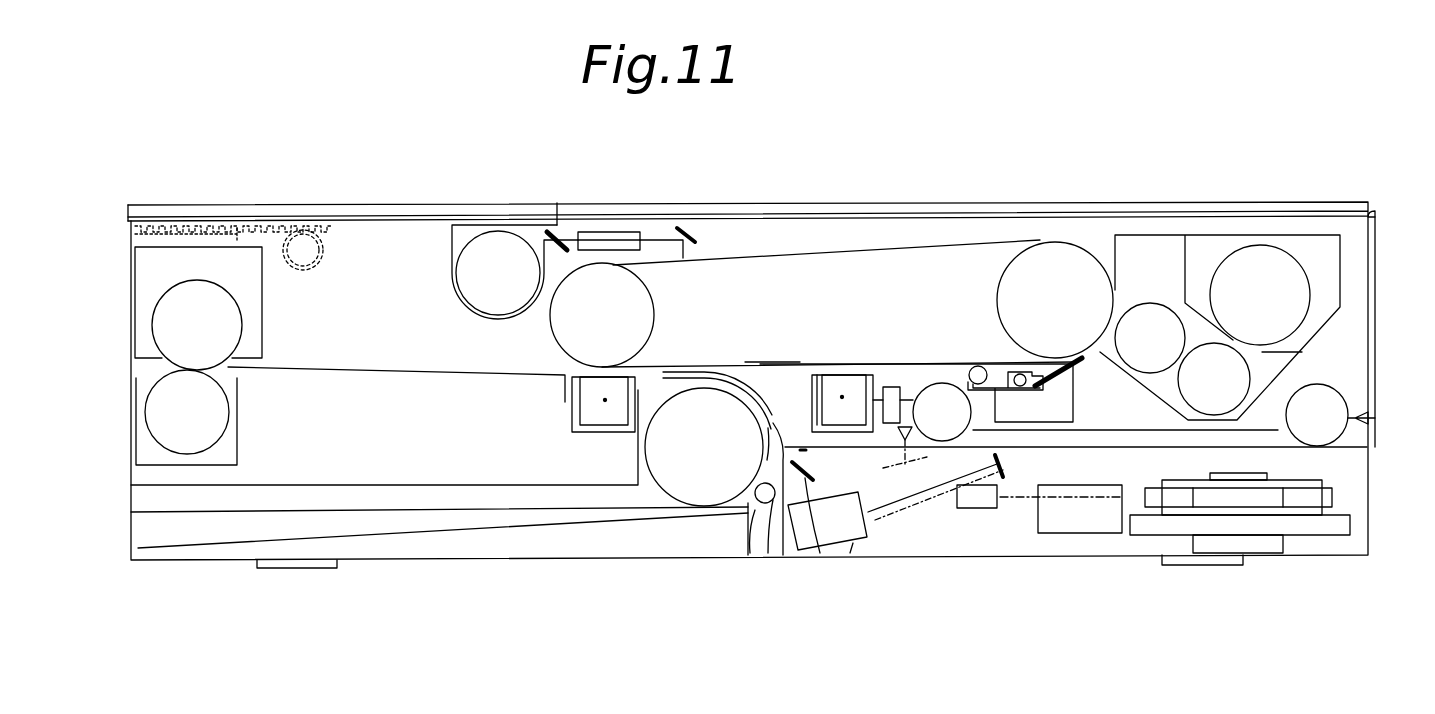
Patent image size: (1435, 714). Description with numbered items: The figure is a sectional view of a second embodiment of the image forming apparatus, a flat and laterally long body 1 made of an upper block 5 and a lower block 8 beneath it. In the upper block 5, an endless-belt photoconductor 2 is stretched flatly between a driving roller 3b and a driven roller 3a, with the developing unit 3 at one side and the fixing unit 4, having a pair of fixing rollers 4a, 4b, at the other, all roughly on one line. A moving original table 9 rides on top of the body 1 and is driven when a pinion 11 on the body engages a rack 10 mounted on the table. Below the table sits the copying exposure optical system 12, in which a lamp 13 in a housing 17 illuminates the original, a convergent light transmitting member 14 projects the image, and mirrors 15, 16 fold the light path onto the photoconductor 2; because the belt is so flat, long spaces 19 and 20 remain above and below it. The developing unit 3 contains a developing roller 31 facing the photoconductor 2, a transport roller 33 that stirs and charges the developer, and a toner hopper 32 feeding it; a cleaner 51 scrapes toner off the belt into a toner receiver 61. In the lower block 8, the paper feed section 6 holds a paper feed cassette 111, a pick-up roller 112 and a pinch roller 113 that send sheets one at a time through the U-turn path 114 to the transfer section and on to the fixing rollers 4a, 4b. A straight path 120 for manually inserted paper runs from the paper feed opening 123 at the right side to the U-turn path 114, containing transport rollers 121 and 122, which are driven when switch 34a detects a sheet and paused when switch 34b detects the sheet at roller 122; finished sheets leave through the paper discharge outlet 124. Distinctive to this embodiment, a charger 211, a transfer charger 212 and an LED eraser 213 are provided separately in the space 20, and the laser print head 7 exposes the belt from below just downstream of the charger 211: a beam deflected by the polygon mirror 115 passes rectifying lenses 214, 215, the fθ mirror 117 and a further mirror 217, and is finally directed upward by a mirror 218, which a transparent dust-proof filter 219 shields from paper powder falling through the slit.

The body 1 is at (1368, 303).
The photoconductor 2 is at (828, 252).
The developing unit 3 is at (1340, 254).
The driven roller 3a is at (653, 310).
The driving roller 3b is at (997, 298).
The fixing unit 4 is at (135, 268).
The fixing roller 4a is at (165, 314).
The fixing roller 4b is at (160, 410).
The upper block 5 is at (1375, 322).
The paper feed section 6 is at (134, 503).
The laser print head 7 is at (920, 560).
The lower block 8 is at (1375, 450).
The original table 9 is at (1067, 212).
The rack 10 is at (240, 222).
The pinion 11 is at (308, 272).
The exposure optical system 12 is at (605, 232).
The lamp 13 is at (452, 268).
The convergent light transmitting member 14 is at (645, 232).
The mirror 15 is at (547, 232).
The mirror 16 is at (695, 228).
The housing 17 is at (470, 312).
The space 19 is at (760, 228).
The space 20 is at (770, 375).
The developing roller 31 is at (1140, 315).
The toner hopper 32 is at (1258, 270).
The transport roller 33 is at (1190, 398).
The switch 34a is at (1372, 418).
The switch 34b is at (942, 412).
The cleaner 51 is at (1078, 370).
The toner receiver 61 is at (1048, 412).
The paper feed cassette 111 is at (388, 545).
The pick-up roller 112 is at (690, 485).
The pinch roller 113 is at (765, 560).
The U-turn path 114 is at (766, 440).
The polygon mirror 115 is at (1340, 495).
The fθ mirror 117 is at (855, 550).
The straight path 120 is at (1088, 432).
The transport roller 121 is at (1330, 400).
The transport roller 122 is at (930, 488).
The paper feed opening 123 is at (1370, 447).
The paper discharge outlet 124 is at (135, 366).
The charger 211 is at (873, 377).
The transfer charger 212 is at (652, 378).
The eraser 213 is at (903, 387).
The rectifying lens 214 is at (1093, 535).
The rectifying lens 215 is at (978, 510).
The mirror 217 is at (1012, 480).
The mirror 218 is at (815, 555).
The dust-proof filter 219 is at (818, 456).